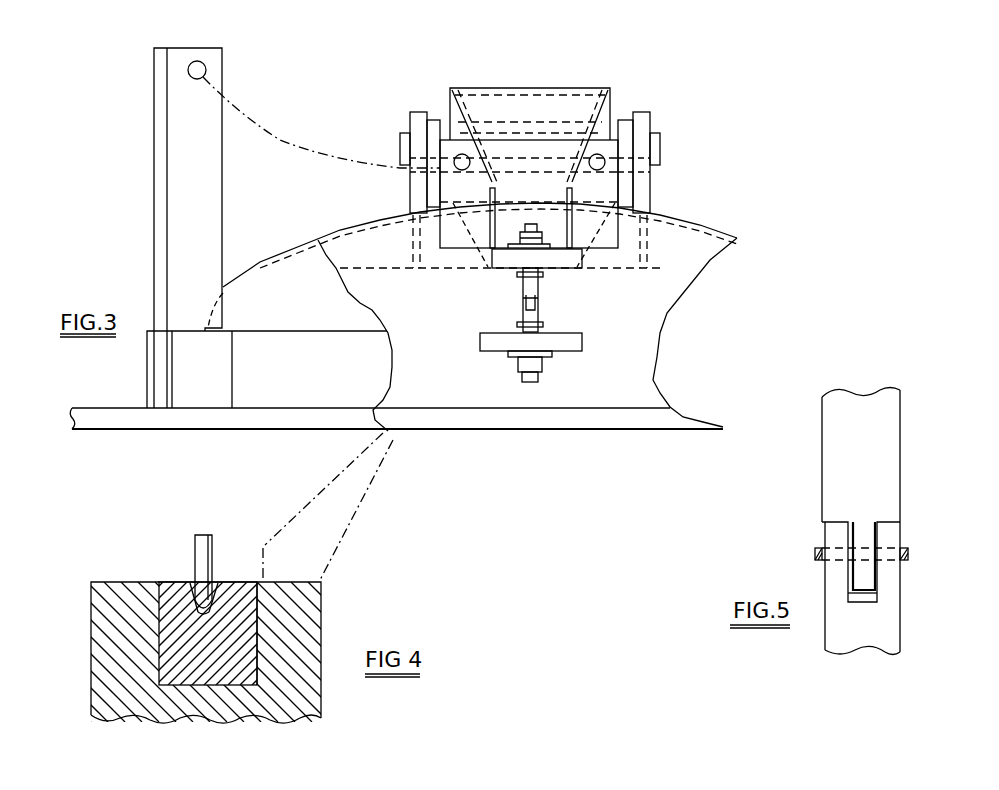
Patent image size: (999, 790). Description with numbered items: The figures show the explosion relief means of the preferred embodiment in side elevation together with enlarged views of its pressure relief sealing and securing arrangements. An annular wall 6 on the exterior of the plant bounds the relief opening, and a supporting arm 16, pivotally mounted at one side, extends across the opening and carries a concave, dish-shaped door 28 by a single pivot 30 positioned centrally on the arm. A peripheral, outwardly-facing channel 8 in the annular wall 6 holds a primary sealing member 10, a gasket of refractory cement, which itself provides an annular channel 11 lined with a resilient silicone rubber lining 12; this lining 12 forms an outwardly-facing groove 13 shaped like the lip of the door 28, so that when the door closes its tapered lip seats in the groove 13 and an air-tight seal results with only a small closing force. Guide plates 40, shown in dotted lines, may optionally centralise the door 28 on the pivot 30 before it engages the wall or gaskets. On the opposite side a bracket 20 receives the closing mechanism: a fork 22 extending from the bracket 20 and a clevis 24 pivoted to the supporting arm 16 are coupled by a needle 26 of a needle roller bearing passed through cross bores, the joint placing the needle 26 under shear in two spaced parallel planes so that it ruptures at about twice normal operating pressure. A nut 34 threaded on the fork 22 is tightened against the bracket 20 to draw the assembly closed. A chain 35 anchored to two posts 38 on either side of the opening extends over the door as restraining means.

In FIG. 3, the annular wall 6 is at (654, 376).
In FIG. 4, the annular wall 6 is at (310, 688).
In FIG. 4, the peripheral outwardly-facing channel 8 is at (258, 636).
In FIG. 4, the primary sealing member 10 is at (255, 583).
In FIG. 4, the annular outwardly-facing channel 11 is at (190, 578).
In FIG. 4, the lining 12 is at (220, 583).
In FIG. 4, the outwardly-facing peripheral groove 13 is at (214, 583).
In FIG. 3, the supporting arm 16 is at (583, 88).
In FIG. 3, the bracket 20 is at (582, 337).
In FIG. 3, the fork 22 is at (543, 310).
In FIG. 5, the fork 22 is at (890, 620).
In FIG. 3, the clevis 24 is at (542, 283).
In FIG. 5, the clevis 24 is at (893, 460).
In FIG. 5, the needle 26 is at (904, 552).
In FIG. 3, the door 28 is at (705, 222).
In FIG. 4, the door 28 is at (198, 552).
In FIG. 3, the pivot 30 is at (655, 148).
In FIG. 3, the nut 34 is at (545, 362).
In FIG. 3, the chain 35 is at (237, 110).
In FIG. 3, the posts 38 is at (159, 79).
In FIG. 4, the guide plates 40 is at (349, 530).